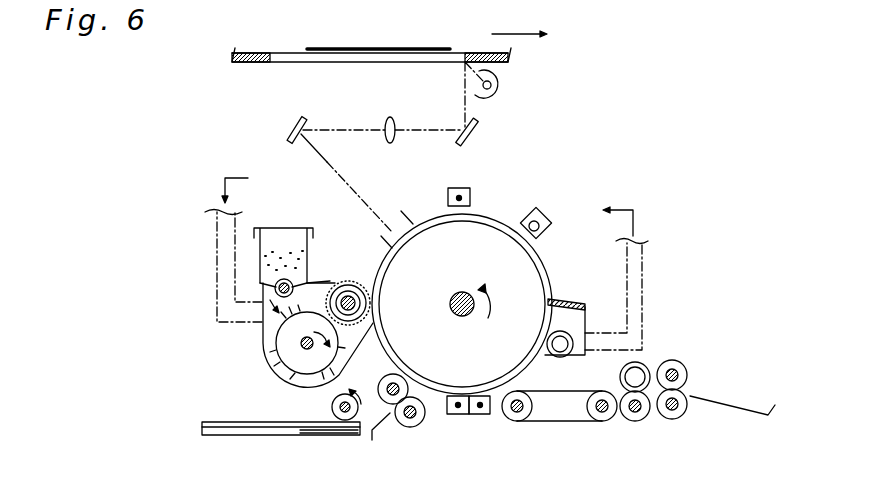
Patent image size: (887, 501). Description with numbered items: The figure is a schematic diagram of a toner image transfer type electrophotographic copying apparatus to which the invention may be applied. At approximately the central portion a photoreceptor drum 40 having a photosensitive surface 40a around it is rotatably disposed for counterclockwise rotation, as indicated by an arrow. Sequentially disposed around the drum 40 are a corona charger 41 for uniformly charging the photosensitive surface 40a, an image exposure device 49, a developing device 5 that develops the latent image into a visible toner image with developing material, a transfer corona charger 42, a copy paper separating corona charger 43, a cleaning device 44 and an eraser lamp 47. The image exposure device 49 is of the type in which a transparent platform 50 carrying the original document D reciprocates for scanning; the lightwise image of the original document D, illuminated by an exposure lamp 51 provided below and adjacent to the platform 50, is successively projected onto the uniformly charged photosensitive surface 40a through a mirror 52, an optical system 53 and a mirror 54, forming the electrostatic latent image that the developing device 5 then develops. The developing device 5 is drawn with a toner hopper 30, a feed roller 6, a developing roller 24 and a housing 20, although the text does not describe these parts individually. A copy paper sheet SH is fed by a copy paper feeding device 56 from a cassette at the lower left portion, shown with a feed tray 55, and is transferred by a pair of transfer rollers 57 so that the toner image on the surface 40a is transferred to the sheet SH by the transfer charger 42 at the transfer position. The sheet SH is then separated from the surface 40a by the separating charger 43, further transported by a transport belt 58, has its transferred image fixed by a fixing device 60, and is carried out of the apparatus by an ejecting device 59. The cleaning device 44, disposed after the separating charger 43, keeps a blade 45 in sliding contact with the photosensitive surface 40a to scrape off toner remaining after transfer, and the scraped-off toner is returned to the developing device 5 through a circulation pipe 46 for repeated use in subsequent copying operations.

The original document D is at (400, 48).
The transparent platform 50 is at (378, 63).
The image exposure device 49 is at (350, 173).
The exposure lamp 51 is at (498, 92).
The mirror 52 is at (480, 128).
The optical system 53 is at (395, 125).
The mirror 54 is at (293, 125).
The corona charger 41 is at (458, 187).
The photoreceptor drum 40 is at (430, 277).
The photosensitive surface 40a is at (495, 217).
The eraser lamp 47 is at (542, 212).
The blade 45 is at (566, 298).
The cleaning device 44 is at (585, 318).
The circulation pipe 46 is at (217, 232).
The toner hopper 30 is at (287, 228).
The developing device 5 is at (327, 278).
The toner feed roller 6 is at (350, 282).
The developing roller 24 is at (280, 342).
The developing device housing 20 is at (283, 382).
The copy paper feeding device 56 is at (330, 406).
The paper feed tray 55 is at (255, 436).
The copy paper sheet SH is at (300, 436).
The transfer rollers 57 is at (404, 428).
The transfer corona charger 42 is at (458, 415).
The copy paper separating corona charger 43 is at (482, 415).
The transport belt 58 is at (565, 422).
The fixing device 60 is at (645, 368).
The ejecting device 59 is at (676, 362).